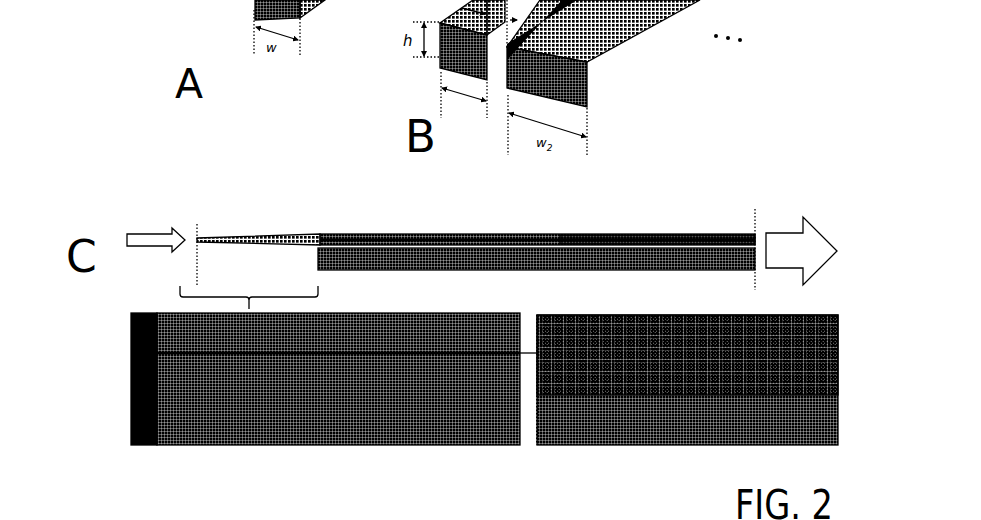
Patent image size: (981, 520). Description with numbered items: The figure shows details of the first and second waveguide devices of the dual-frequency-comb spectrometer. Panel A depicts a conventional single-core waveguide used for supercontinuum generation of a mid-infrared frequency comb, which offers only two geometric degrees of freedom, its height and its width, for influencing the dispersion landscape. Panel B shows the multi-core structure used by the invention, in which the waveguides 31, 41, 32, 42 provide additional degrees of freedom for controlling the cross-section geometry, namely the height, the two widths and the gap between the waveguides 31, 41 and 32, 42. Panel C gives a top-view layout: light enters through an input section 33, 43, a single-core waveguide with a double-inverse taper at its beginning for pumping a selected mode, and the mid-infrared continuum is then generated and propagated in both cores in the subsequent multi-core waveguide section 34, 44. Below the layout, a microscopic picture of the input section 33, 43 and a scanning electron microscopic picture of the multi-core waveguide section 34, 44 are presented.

The waveguide 31 is at (537, 122).
The waveguide 41 is at (452, 58).
The waveguide 32 is at (536, 282).
The waveguide 42 is at (392, 258).
The input section 33 is at (277, 236).
The input section 43 is at (232, 238).
The multi-core waveguide section 34 is at (657, 241).
The multi-core waveguide section 44 is at (597, 243).